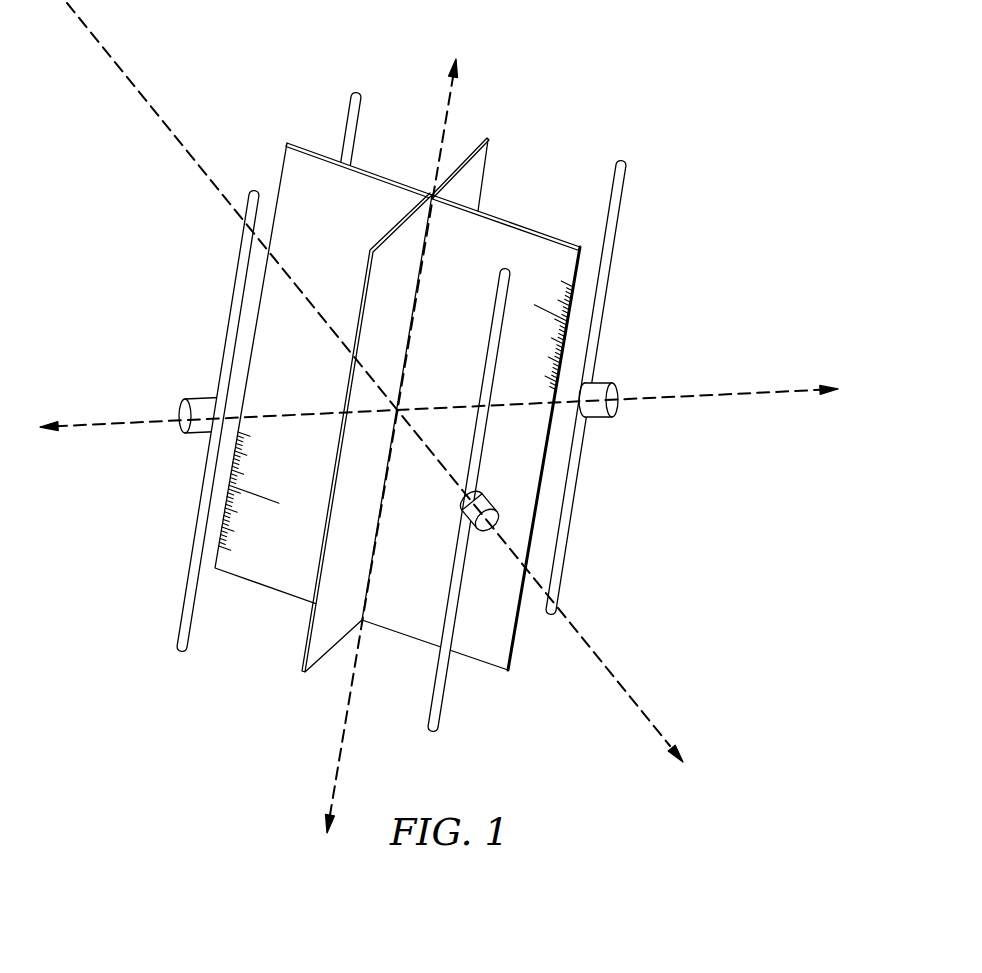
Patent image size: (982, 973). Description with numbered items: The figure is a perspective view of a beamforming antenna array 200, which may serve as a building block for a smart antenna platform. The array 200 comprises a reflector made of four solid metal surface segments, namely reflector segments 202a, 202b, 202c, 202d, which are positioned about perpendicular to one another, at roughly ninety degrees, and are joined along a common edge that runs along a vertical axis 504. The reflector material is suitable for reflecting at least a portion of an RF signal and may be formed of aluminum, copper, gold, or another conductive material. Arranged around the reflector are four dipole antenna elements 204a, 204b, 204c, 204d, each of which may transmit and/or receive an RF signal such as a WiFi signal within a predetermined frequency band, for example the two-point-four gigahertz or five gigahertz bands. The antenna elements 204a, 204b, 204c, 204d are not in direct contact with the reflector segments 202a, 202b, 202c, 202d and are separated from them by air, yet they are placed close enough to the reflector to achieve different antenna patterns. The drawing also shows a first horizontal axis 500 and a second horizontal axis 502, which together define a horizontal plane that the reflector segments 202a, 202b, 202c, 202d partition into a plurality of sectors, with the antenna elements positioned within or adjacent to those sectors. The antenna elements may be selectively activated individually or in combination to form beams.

The beamforming antenna array 200 is at (587, 70).
The reflector segment 202a is at (472, 170).
The reflector segment 202b is at (488, 235).
The reflector segment 202c is at (327, 632).
The reflector segment 202d is at (298, 167).
The antenna element 204a is at (620, 210).
The antenna element 204b is at (443, 690).
The antenna element 204c is at (193, 533).
The antenna element 204d is at (348, 122).
The first horizontal axis 500 is at (698, 395).
The second horizontal axis 502 is at (623, 687).
The vertical axis 504 is at (338, 772).